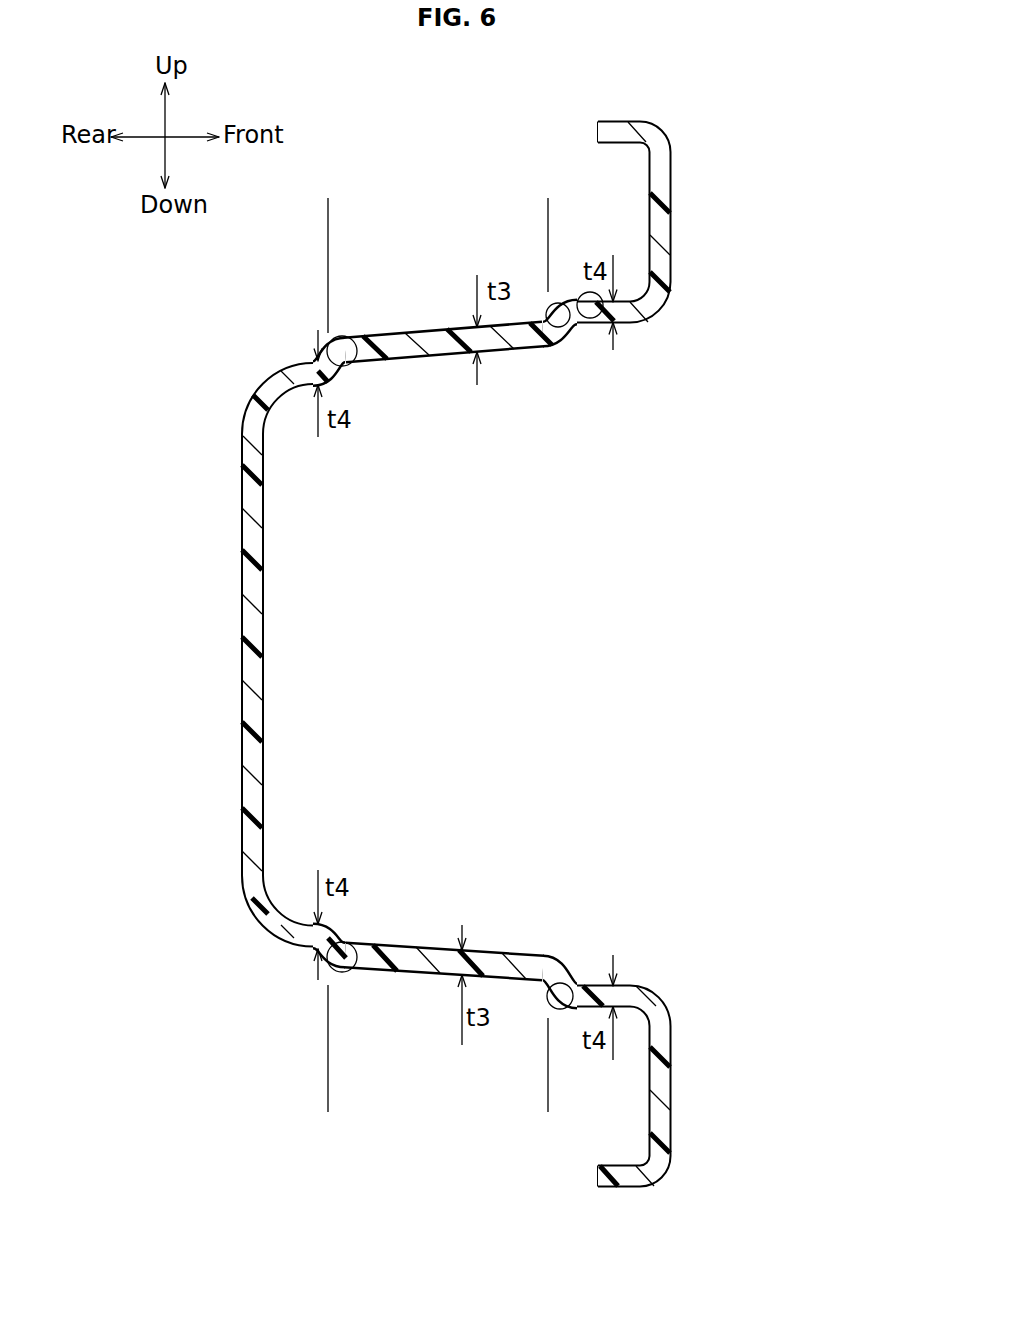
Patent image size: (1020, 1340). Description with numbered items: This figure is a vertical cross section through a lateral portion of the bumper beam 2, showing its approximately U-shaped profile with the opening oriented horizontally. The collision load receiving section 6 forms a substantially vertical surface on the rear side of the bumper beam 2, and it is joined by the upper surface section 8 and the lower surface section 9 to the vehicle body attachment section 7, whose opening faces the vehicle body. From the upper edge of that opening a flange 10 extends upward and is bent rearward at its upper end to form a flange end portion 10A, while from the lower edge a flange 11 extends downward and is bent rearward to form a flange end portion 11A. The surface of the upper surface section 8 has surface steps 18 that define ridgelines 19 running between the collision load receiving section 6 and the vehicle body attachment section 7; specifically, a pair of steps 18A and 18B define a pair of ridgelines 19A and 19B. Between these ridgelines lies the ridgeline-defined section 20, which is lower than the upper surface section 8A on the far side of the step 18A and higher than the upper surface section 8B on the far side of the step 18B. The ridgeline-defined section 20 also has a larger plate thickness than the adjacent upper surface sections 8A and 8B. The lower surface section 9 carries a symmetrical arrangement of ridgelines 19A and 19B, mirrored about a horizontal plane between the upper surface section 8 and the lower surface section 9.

The bumper beam 2 is at (193, 503).
The collision load receiving section 6 is at (243, 670).
The vehicle body attachment section 7 is at (682, 654).
The upper surface section 8 is at (432, 328).
The upper surface section 8A is at (589, 318).
The upper surface section 8B is at (318, 365).
The lower surface section 9 is at (420, 982).
The flange 10 is at (672, 222).
The flange end portion 10A is at (602, 120).
The flange 11 is at (672, 1078).
The flange end portion 11A is at (602, 1190).
The surface steps 18 is at (395, 655).
The step 18A is at (558, 288).
The step 18B is at (322, 328).
The ridgelines 19 is at (512, 656).
The ridgeline 19A is at (548, 336).
The ridgeline 19B is at (350, 360).
The ridgeline-defined section 20 is at (548, 212).